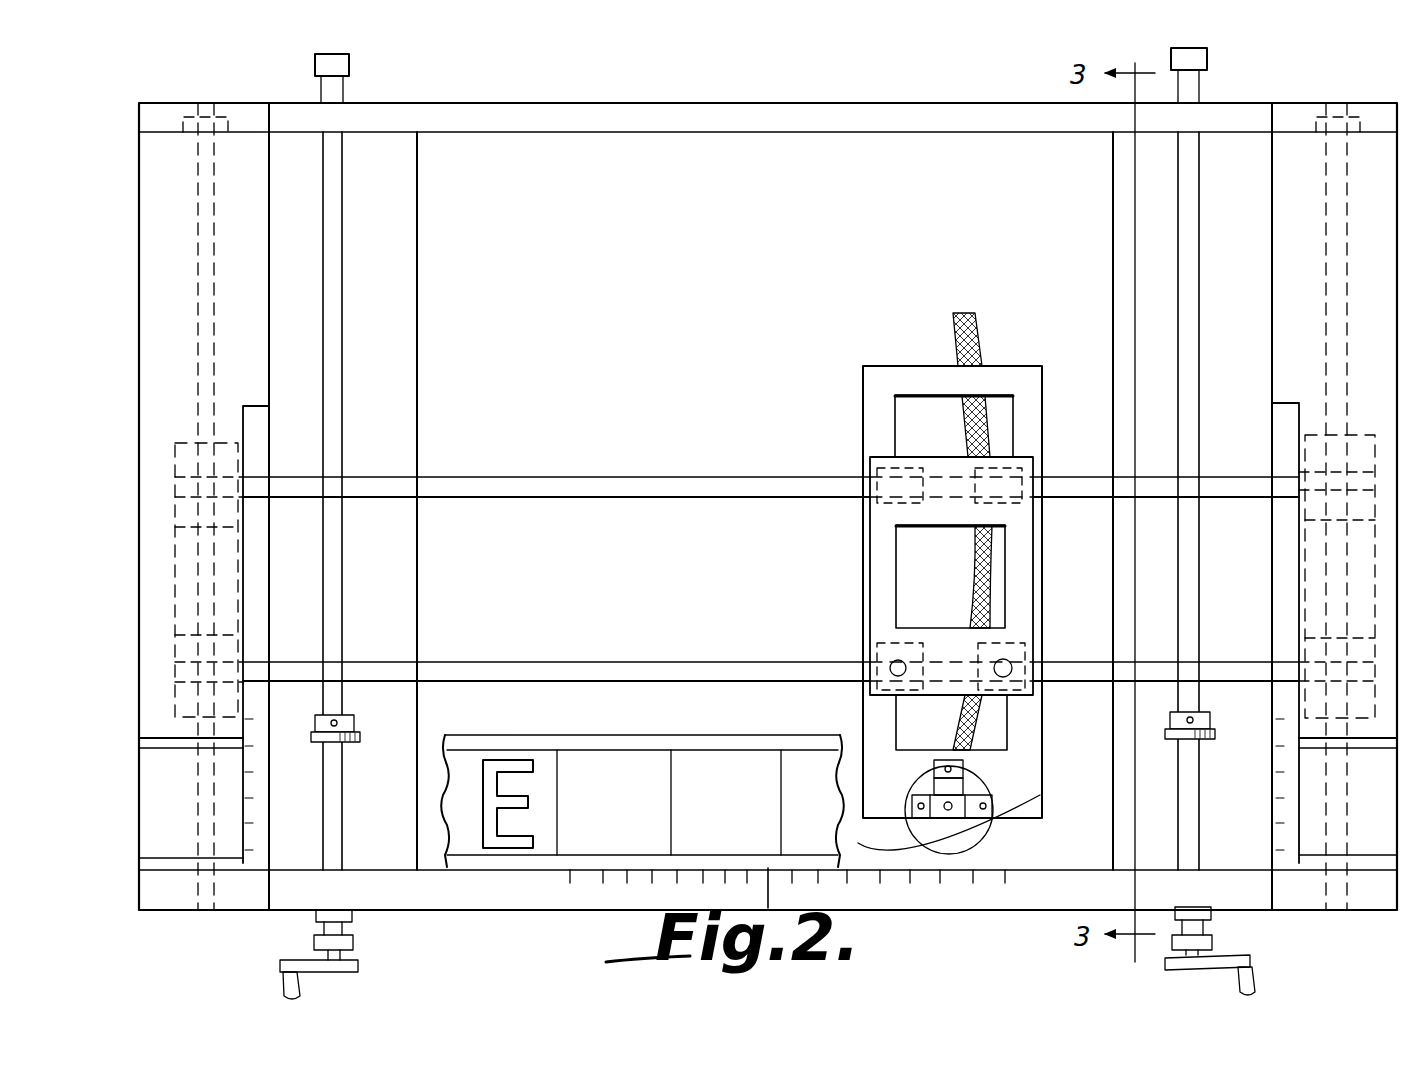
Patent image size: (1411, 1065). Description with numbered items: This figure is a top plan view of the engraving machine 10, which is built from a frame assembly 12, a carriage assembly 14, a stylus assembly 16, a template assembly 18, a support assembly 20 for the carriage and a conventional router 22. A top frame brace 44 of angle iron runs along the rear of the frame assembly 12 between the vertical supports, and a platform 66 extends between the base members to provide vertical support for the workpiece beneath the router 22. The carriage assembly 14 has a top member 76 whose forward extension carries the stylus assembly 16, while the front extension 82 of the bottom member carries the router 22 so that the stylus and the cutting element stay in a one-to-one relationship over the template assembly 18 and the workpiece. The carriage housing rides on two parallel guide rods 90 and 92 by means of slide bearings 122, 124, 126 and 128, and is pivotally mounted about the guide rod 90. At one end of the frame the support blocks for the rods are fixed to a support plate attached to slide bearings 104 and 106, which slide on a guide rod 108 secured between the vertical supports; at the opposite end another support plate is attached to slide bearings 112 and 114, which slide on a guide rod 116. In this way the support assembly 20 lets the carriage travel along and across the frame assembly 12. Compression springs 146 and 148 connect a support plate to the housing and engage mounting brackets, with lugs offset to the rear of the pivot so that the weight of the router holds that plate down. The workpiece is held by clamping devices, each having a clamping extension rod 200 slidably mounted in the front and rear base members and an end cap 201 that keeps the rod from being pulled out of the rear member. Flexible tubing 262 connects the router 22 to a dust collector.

The engraving machine 10 is at (226, 926).
The frame assembly 12 is at (128, 735).
The carriage assembly 14 is at (858, 714).
The stylus assembly 16 is at (940, 824).
The template assembly 18 is at (656, 735).
The support assembly 20 is at (249, 655).
The router 22 is at (870, 846).
The top frame brace 44 is at (410, 117).
The platform 66 is at (545, 572).
The top member 76 is at (878, 382).
The front extension 82 is at (1018, 826).
The guide rod 90 is at (486, 486).
The guide rod 92 is at (477, 673).
The slide bearing 104 is at (1360, 478).
The slide bearing 106 is at (1365, 670).
The guide rod 108 is at (1345, 266).
The slide bearing 112 is at (195, 672).
The slide bearing 114 is at (170, 487).
The guide rod 116 is at (204, 348).
The slide bearing 122 is at (1003, 481).
The slide bearing 124 is at (905, 485).
The slide bearing 126 is at (1010, 641).
The slide bearing 128 is at (893, 643).
The compression spring 146 is at (1008, 672).
The compression spring 148 is at (872, 666).
The clamping extension rod 200 is at (1200, 207).
The end cap 201 is at (1196, 60).
The flexible tubing 262 is at (976, 345).